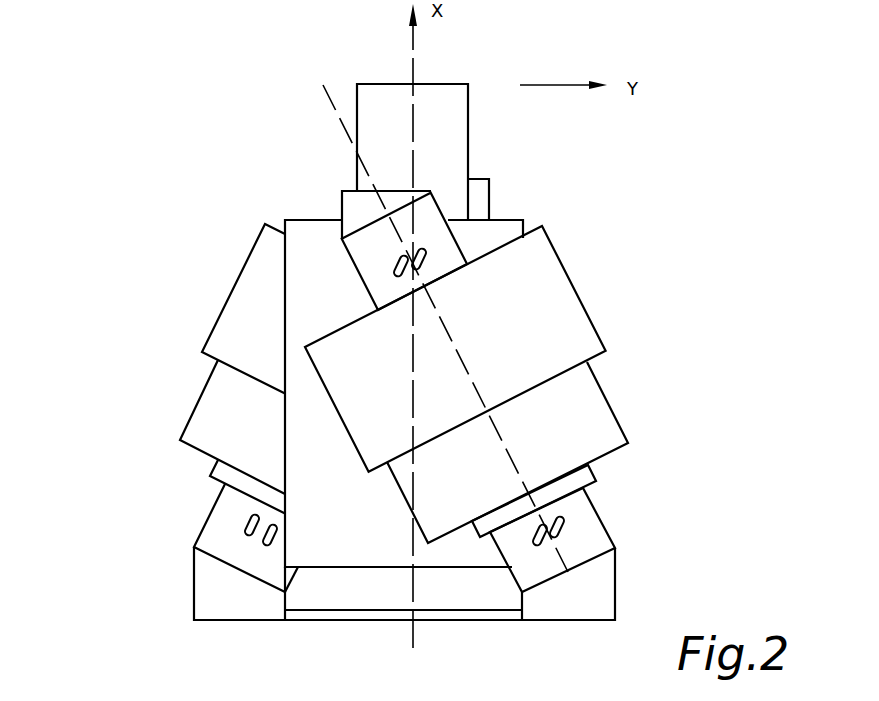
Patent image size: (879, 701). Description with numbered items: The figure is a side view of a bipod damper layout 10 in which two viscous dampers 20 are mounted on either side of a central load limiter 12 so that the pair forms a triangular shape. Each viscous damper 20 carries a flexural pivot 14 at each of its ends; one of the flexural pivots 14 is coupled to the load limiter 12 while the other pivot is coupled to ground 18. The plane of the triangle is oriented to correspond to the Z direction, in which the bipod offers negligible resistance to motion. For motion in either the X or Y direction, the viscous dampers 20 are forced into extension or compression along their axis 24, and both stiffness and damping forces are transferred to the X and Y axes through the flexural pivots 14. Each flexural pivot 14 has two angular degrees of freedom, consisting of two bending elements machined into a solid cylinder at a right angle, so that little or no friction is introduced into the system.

The bipod damper layout 10 is at (131, 224).
The load limiter 12 is at (352, 569).
The flexural pivots 14 is at (340, 230).
The ground 18 is at (443, 622).
The viscous dampers 20 is at (223, 337).
The axis 24 is at (328, 95).